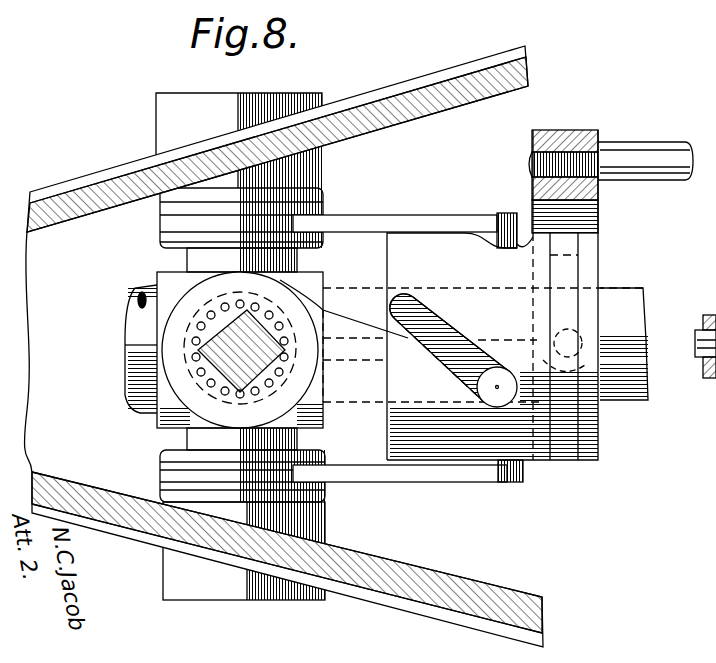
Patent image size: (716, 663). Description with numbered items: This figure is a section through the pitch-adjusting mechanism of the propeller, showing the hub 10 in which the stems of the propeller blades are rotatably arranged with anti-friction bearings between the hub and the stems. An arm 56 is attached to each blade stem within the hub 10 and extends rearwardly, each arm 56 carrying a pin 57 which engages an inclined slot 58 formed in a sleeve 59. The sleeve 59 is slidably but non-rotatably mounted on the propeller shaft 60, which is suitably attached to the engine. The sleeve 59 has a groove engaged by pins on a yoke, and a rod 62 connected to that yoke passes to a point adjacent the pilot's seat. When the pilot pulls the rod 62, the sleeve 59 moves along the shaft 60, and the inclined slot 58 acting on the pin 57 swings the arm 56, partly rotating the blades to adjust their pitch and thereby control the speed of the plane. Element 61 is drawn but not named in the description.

The hub 10 is at (360, 110).
The arm 56 is at (440, 223).
The pin 57 is at (513, 213).
The inclined slot 58 is at (533, 237).
The sleeve 59 is at (543, 460).
The propeller shaft 60 is at (638, 398).
The nut 61 is at (590, 220).
The rod 62 is at (675, 155).